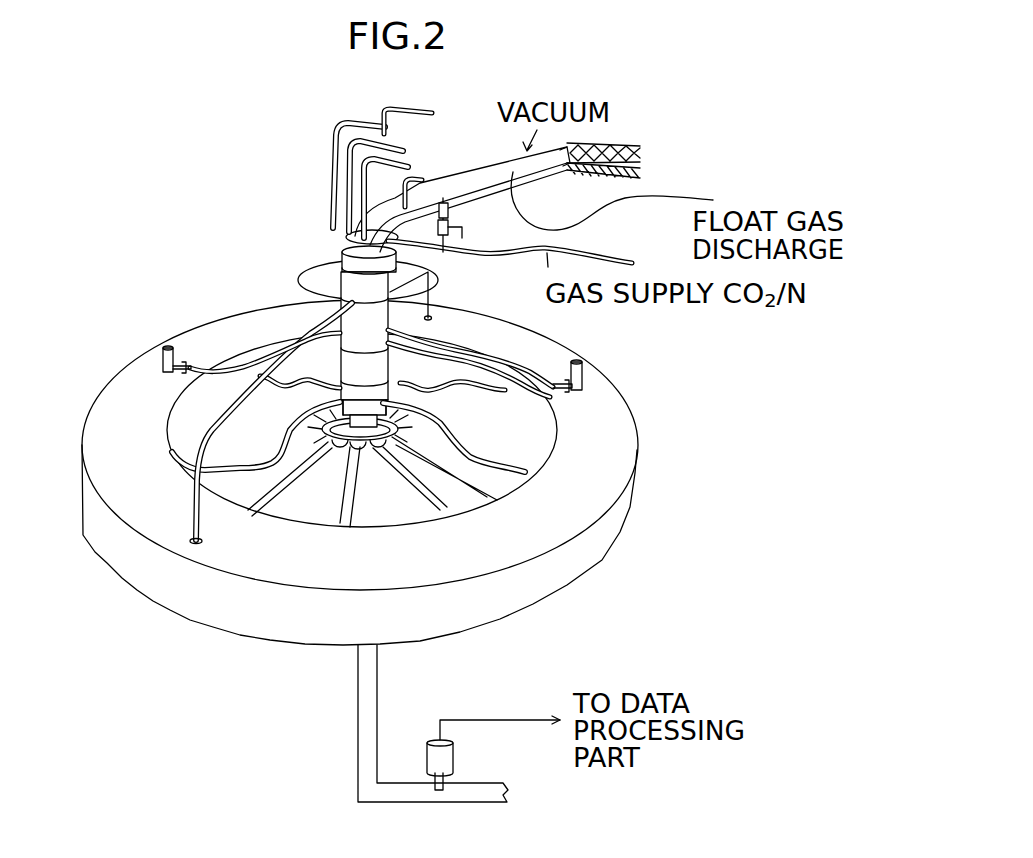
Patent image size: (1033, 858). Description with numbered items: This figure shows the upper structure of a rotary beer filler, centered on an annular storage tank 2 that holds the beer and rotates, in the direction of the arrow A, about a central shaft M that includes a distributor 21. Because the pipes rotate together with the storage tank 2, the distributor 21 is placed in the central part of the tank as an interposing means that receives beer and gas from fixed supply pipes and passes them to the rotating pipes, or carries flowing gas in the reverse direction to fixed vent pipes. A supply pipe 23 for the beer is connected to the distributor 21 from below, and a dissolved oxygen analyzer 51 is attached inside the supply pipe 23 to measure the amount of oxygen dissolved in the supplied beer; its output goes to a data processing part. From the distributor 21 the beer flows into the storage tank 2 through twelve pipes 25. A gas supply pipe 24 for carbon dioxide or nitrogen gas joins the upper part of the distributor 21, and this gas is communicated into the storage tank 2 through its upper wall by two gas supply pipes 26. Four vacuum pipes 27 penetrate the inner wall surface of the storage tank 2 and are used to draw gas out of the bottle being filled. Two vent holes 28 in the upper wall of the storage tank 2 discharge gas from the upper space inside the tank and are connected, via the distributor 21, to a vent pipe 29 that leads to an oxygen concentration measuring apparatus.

The storage tank 2 is at (623, 407).
The distributor 21 is at (342, 250).
The supply pipe 23 is at (357, 768).
The gas supply pipe 24 is at (607, 257).
The pipes 25 is at (335, 515).
The gas supply pipes 26 is at (187, 510).
The vacuum pipes 27 is at (247, 463).
The vent holes 28 is at (168, 345).
The vent pipe 29 is at (609, 170).
The dissolved oxygen analyzer 51 is at (460, 757).
The arrow A is at (411, 265).
The central shaft M is at (470, 315).